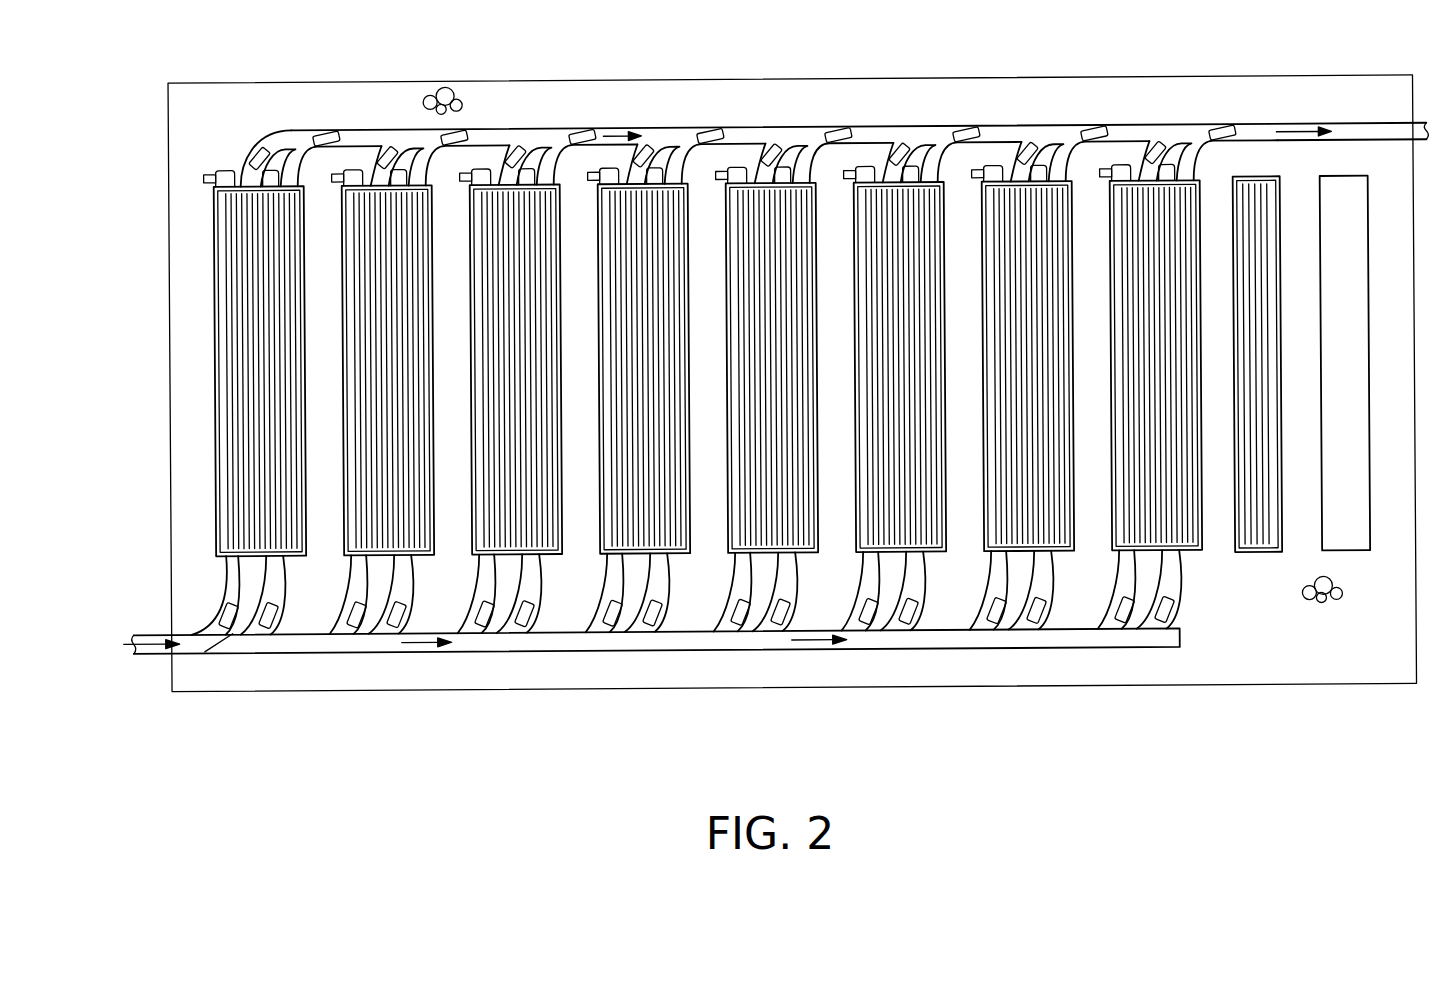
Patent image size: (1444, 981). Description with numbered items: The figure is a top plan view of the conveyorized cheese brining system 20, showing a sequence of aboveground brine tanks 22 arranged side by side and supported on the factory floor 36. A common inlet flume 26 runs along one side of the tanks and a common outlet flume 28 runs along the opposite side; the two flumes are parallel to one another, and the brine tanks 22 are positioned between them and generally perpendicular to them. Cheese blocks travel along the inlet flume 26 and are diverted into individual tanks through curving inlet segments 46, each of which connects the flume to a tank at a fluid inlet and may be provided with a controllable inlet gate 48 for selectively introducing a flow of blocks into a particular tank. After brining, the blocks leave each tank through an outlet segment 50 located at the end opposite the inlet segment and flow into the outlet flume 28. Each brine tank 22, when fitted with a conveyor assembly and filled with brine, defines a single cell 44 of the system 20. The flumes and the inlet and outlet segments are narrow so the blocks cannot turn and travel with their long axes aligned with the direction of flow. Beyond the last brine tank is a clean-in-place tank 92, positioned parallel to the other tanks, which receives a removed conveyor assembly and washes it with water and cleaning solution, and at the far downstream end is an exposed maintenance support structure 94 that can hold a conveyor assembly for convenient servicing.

The conveyorized cheese brining system 20 is at (967, 61).
The brine tank 22 is at (215, 241).
The common inlet flume 26 is at (550, 650).
The common outlet flume 28 is at (747, 125).
The factory floor 36 is at (898, 117).
The cell 44 is at (555, 518).
The inlet segment 46 is at (223, 574).
The inlet gate 48 is at (217, 636).
The outlet segment 50 is at (248, 152).
The clean-in-place tank 92 is at (1236, 521).
The maintenance support structure 94 is at (1372, 490).